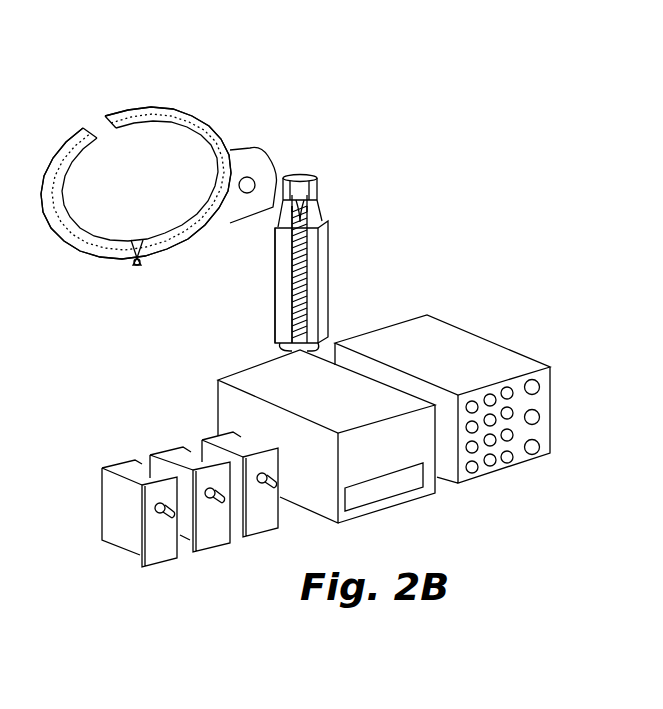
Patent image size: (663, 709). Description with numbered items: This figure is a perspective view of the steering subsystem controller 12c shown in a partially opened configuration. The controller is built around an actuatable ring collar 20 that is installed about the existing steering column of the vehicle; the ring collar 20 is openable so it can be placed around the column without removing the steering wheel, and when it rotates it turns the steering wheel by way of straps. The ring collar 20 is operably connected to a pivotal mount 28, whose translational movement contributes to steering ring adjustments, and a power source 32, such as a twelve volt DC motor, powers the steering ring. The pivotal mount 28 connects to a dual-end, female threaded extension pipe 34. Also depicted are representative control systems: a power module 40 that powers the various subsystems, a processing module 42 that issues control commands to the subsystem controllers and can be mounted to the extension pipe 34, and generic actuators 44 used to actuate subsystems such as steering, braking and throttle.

The steering subsystem controller 12c is at (97, 90).
The actuatable ring collar 20 is at (167, 110).
The pivotal mount 28 is at (298, 173).
The power source 32 is at (327, 244).
The dual-end, female threaded extension pipe 34 is at (277, 258).
The power module 40 is at (453, 347).
The processing module 42 is at (257, 382).
The generic actuators 44 is at (147, 442).